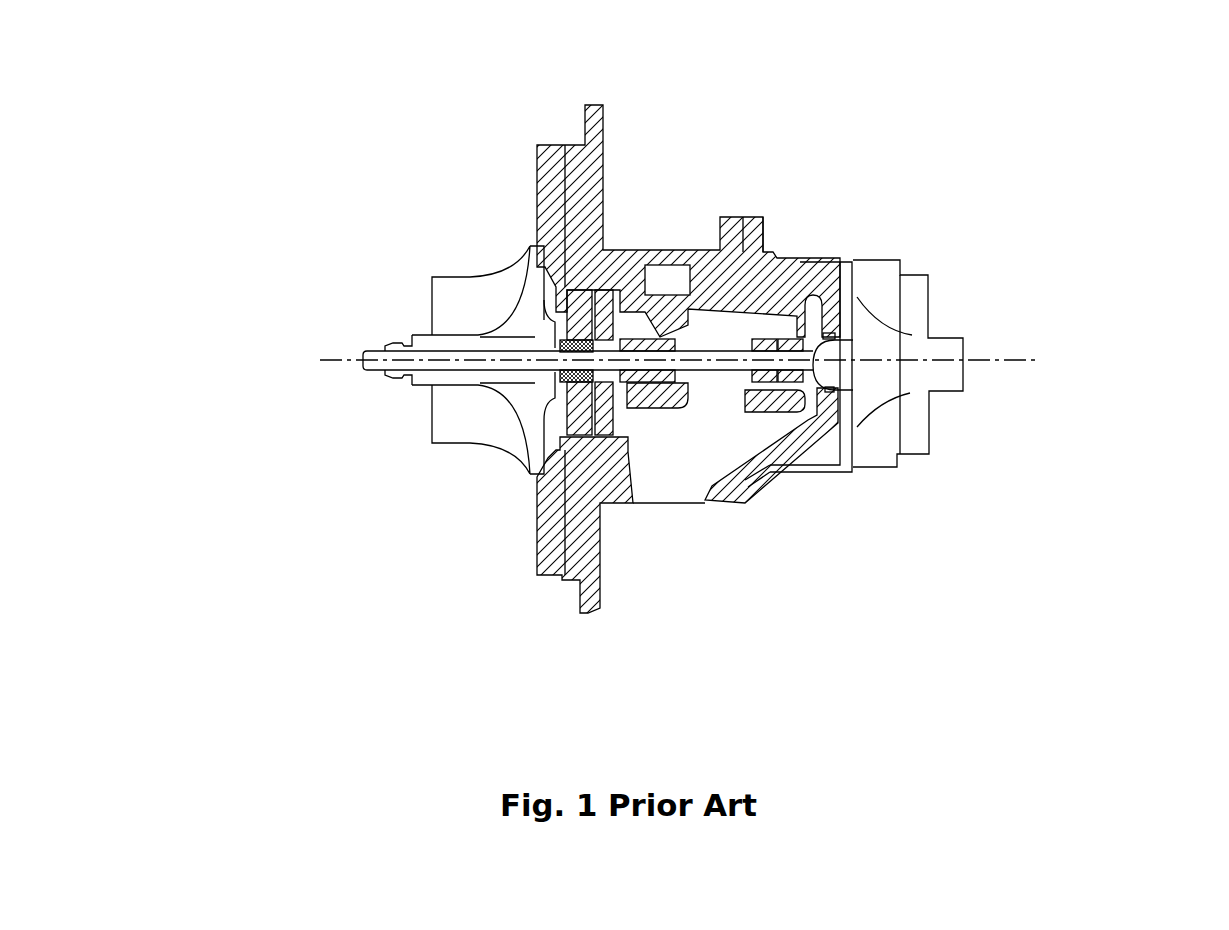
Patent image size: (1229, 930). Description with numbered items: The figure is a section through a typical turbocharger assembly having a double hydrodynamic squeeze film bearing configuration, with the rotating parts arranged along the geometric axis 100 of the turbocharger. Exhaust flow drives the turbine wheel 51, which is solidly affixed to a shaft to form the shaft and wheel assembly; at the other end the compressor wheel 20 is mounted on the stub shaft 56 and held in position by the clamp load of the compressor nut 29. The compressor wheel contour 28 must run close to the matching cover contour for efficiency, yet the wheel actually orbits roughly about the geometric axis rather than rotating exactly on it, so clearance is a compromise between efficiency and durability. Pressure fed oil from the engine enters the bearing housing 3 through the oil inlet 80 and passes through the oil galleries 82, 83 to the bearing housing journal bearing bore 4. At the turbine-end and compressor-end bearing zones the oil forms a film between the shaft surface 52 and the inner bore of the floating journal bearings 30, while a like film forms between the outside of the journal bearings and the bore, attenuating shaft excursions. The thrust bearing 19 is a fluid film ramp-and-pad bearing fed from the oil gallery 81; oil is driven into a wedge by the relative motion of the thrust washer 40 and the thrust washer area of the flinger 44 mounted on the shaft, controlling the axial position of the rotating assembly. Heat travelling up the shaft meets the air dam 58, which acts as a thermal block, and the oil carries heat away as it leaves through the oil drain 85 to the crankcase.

The geometric axis 100 is at (1012, 372).
The bearing housing 3 is at (752, 216).
The bearing housing journal bearing bore 4 is at (763, 333).
The thrust bearing 19 is at (587, 437).
The compressor wheel 20 is at (488, 400).
The compressor wheel contour 28 is at (497, 447).
The compressor nut 29 is at (395, 378).
The journal bearings 30 is at (740, 388).
The thrust washer 40 is at (620, 400).
The flinger 44 is at (563, 380).
The turbine wheel 51 is at (875, 332).
The shaft surface 52 is at (672, 337).
The stub shaft 56 is at (478, 353).
The air dam 58 is at (748, 447).
The oil inlet 80 is at (657, 275).
The oil gallery 81 is at (623, 307).
The oil gallery 82 is at (852, 287).
The oil gallery 83 is at (650, 318).
The oil drain 85 is at (670, 487).